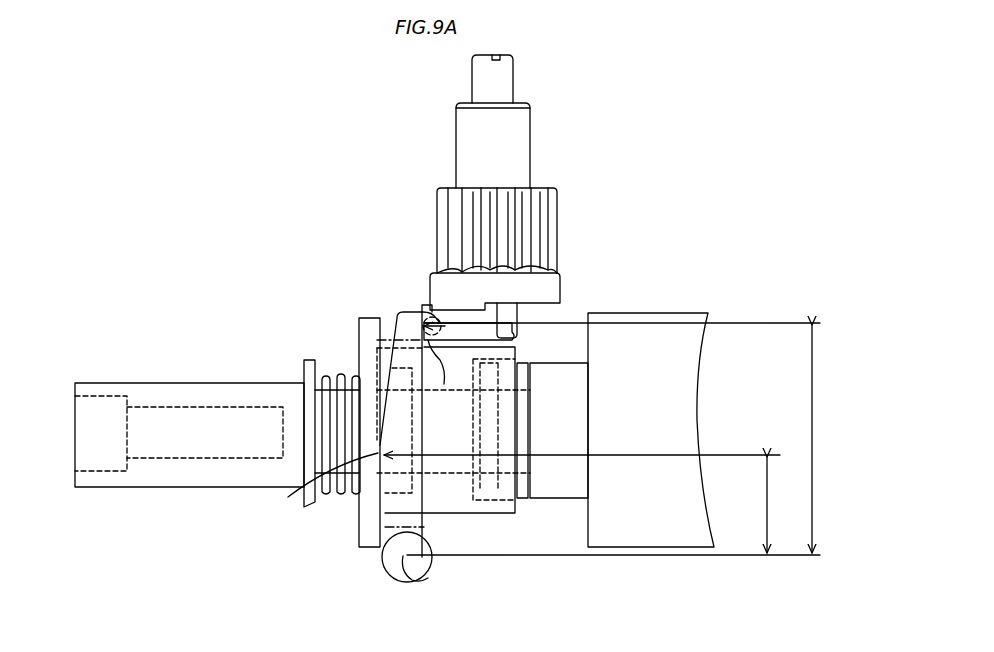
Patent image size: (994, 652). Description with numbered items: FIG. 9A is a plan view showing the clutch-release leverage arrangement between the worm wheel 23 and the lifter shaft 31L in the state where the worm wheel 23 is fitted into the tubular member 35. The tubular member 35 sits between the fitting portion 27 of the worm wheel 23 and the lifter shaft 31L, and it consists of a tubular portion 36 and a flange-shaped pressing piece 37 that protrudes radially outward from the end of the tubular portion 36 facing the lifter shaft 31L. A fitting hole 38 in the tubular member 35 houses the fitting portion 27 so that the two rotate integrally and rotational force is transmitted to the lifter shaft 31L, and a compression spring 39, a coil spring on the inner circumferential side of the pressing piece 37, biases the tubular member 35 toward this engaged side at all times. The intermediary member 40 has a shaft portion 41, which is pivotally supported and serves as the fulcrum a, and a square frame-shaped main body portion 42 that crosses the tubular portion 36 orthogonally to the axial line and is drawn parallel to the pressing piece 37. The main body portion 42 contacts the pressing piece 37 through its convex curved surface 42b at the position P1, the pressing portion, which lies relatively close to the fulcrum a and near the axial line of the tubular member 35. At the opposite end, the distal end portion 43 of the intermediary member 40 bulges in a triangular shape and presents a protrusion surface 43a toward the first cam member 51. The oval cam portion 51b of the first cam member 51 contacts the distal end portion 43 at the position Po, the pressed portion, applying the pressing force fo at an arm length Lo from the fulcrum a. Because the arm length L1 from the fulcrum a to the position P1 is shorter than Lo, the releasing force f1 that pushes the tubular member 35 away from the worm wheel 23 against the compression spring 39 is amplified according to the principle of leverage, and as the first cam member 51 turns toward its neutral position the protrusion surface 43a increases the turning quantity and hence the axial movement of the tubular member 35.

The first cam member 51 is at (533, 118).
The cam portion 51b is at (462, 272).
The distal end portion 43 is at (428, 306).
The protrusion surface 43a is at (441, 388).
The pressing piece 37 is at (368, 318).
The main body portion 42 is at (390, 352).
The curved surface 42b is at (300, 480).
The compression spring 39 is at (325, 378).
The tubular member 35 is at (330, 540).
The lifter shaft 31L is at (176, 382).
The tubular portion 36 is at (455, 503).
The fitting portion 27 is at (498, 505).
The fitting hole 38 is at (518, 392).
The worm wheel 23 is at (678, 312).
The shaft portion 41 is at (430, 572).
The intermediary member 40 is at (380, 565).
The fulcrum a is at (407, 582).
The position P1 (pressing portion) P1 is at (378, 460).
The position Po (pressed portion) Po is at (412, 320).
The releasing force f1 is at (632, 455).
The pressing force fo is at (560, 318).
The distance Lo is at (814, 428).
The distance L1 is at (770, 485).